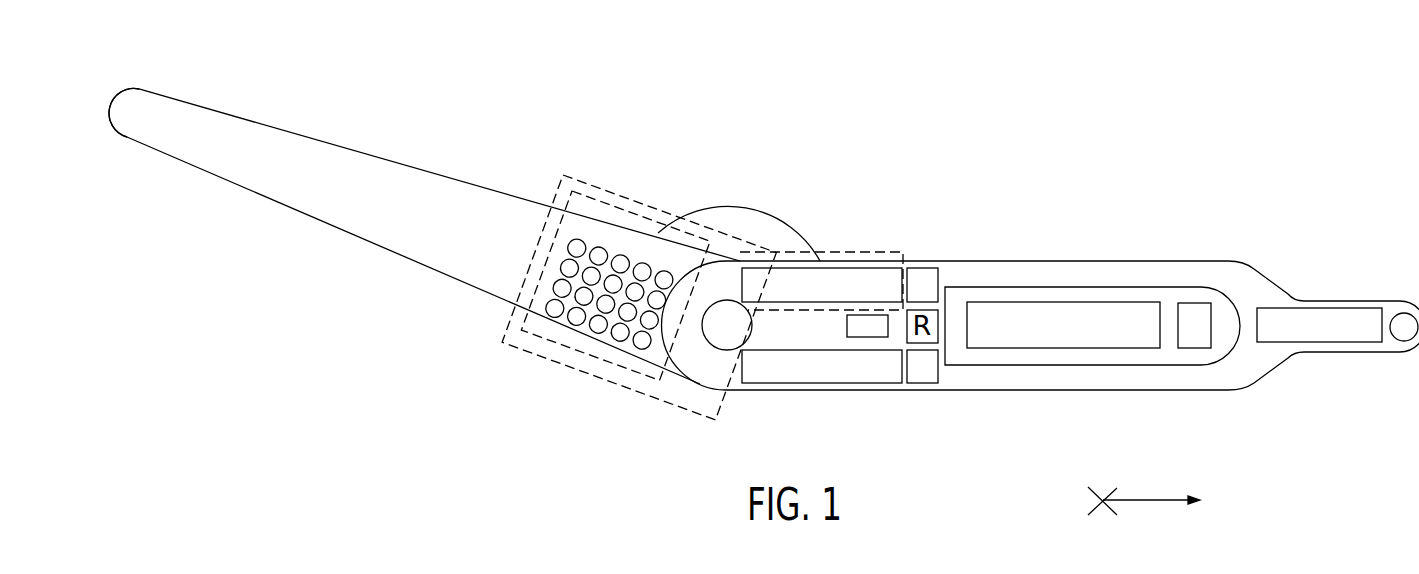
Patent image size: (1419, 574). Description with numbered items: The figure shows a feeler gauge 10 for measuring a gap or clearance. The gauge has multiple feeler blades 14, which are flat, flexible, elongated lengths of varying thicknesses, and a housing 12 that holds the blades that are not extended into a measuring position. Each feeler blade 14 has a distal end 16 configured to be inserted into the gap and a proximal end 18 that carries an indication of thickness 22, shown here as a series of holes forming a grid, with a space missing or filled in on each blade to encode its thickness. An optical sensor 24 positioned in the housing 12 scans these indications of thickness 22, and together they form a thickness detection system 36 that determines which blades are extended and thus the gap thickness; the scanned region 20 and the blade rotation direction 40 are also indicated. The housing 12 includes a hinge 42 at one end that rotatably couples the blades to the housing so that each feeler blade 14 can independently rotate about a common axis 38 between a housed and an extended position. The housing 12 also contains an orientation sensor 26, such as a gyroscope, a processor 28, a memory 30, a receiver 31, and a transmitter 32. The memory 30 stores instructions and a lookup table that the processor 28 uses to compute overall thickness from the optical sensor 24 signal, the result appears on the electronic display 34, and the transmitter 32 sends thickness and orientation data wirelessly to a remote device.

The feeler gauge 10 is at (1170, 158).
The housing 12 is at (981, 261).
The feeler blades 14 is at (307, 138).
The distal end 16 is at (129, 86).
The proximal end 18 is at (663, 228).
The optical sensing region 20 is at (757, 208).
The indication of thickness 22 is at (590, 357).
The optical sensor 24 is at (867, 267).
The orientation sensor 26 is at (823, 388).
The processor 28 is at (920, 387).
The memory 30 is at (923, 267).
The receiver 31 is at (940, 322).
The transmitter 32 is at (1320, 308).
The electronic display 34 is at (1042, 337).
The thickness detection system 36 is at (622, 386).
The common axis 38 is at (1093, 502).
The measurement direction 40 is at (1143, 498).
The hinge 42 is at (710, 348).